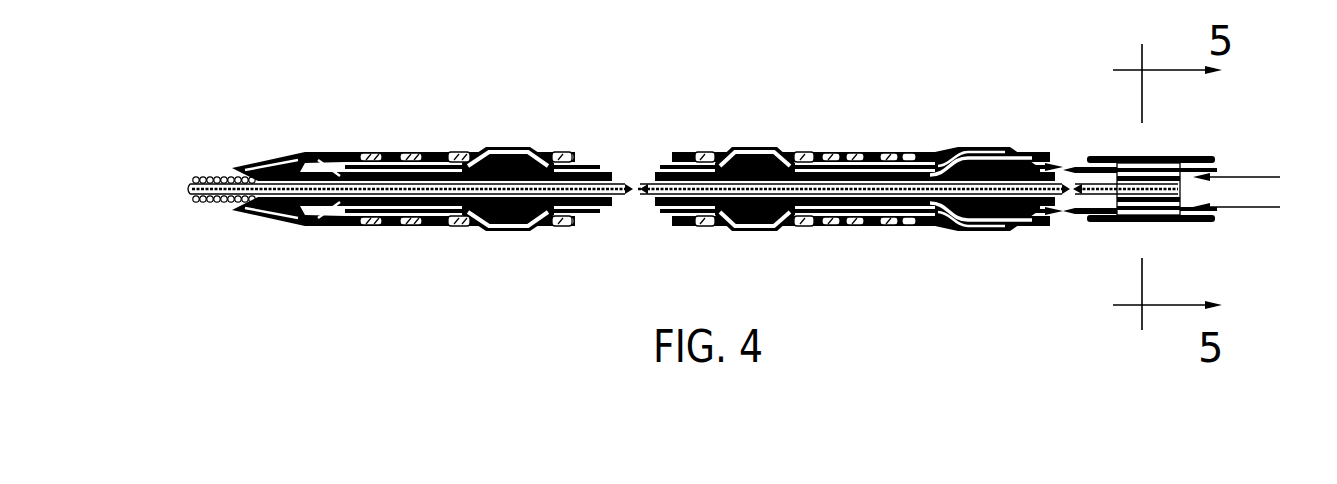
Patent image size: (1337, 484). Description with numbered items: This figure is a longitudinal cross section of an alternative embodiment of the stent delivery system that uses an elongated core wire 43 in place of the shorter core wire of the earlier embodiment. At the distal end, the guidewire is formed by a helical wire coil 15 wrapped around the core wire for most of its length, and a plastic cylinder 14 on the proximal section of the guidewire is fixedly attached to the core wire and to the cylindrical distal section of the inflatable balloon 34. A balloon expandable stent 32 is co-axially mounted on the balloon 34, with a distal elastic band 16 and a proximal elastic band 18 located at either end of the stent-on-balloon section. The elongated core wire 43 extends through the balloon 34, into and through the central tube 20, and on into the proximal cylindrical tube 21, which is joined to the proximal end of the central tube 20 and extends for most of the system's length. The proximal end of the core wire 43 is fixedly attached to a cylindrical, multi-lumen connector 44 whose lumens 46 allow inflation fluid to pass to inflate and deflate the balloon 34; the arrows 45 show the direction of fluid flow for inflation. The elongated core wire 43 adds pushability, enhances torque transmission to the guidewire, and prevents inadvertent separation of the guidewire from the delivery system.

The plastic cylinder 14 is at (318, 160).
The helical wire coil 15 is at (210, 165).
The distal elastic band 16 is at (362, 150).
The proximal elastic band 18 is at (972, 150).
The central tube 20 is at (1045, 215).
The proximal cylindrical tube 21 is at (1180, 165).
The balloon expandable stent 32 is at (450, 150).
The inflatable balloon 34 is at (497, 230).
The elongated core wire 43 is at (615, 197).
The multi-lumen connector 44 is at (1190, 187).
The arrows 45 is at (1280, 177).
The lumens 46 is at (1140, 207).